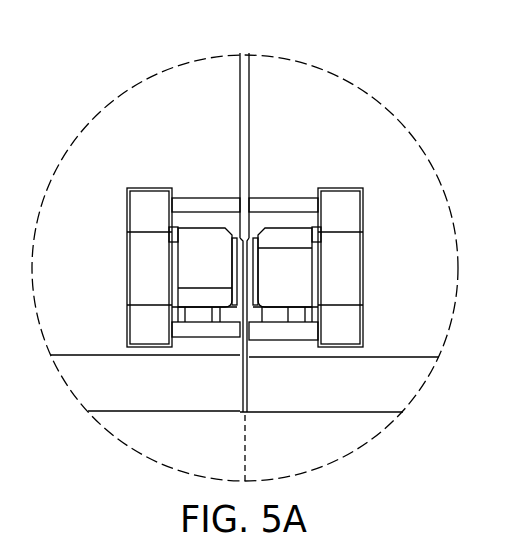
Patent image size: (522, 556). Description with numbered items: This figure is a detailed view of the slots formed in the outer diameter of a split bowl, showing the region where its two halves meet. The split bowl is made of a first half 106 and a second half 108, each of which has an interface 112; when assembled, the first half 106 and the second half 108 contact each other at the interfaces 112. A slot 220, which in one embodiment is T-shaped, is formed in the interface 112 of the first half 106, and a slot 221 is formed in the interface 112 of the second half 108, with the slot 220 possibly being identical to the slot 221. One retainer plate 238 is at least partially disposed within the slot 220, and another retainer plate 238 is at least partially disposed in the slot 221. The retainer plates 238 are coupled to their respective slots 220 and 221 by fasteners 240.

The first half 106 is at (117, 140).
The second half 108 is at (355, 120).
The interface 112 is at (245, 58).
The slot 220 is at (212, 207).
The slot 221 is at (282, 205).
The retainer plate 238 is at (150, 265).
The fastener 240 is at (202, 298).